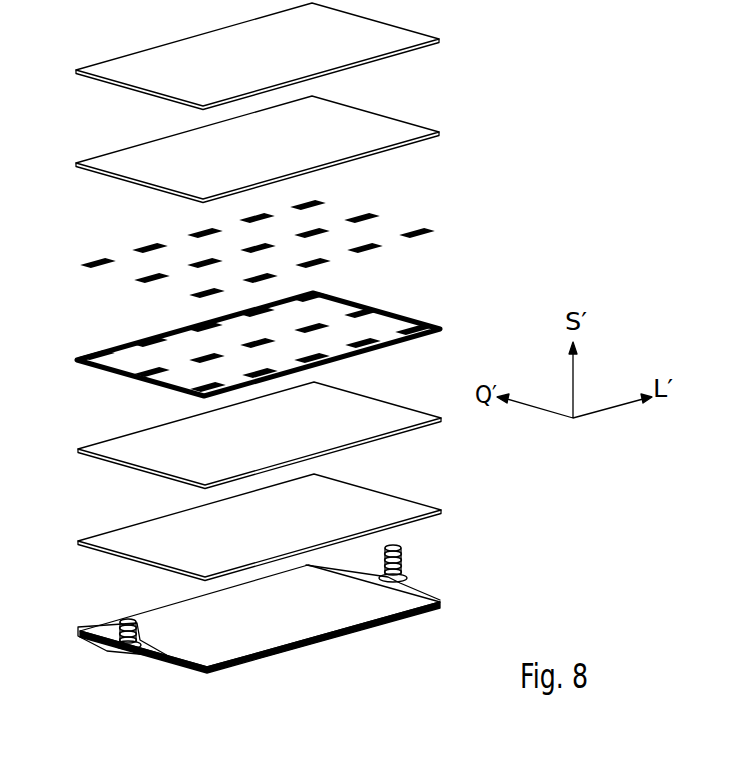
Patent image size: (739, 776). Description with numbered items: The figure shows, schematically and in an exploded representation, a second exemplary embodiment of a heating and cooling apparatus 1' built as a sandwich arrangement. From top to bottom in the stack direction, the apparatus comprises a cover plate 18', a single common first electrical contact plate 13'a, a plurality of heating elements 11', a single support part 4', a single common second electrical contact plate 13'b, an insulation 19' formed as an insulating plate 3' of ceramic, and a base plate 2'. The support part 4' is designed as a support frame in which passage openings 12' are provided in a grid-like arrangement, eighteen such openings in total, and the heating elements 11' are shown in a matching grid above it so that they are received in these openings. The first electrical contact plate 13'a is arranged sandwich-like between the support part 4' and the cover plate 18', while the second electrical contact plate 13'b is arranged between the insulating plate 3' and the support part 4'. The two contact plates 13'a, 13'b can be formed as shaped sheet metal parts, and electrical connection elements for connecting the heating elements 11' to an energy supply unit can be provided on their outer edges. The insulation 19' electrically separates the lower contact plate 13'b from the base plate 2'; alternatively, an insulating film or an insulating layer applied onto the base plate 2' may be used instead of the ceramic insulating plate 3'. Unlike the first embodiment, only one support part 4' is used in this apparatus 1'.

The heating and cooling apparatus 1' is at (317, 338).
The cover plate 18' is at (253, 56).
The first electrical contact plate 13'a is at (253, 149).
The heating elements 11' is at (241, 249).
The support part 4' is at (267, 318).
The passage openings 12' is at (243, 344).
The second electrical contact plate 13'b is at (254, 435).
The insulating plate 3' is at (259, 527).
The insulation 19' is at (259, 527).
The base plate 2' is at (250, 609).